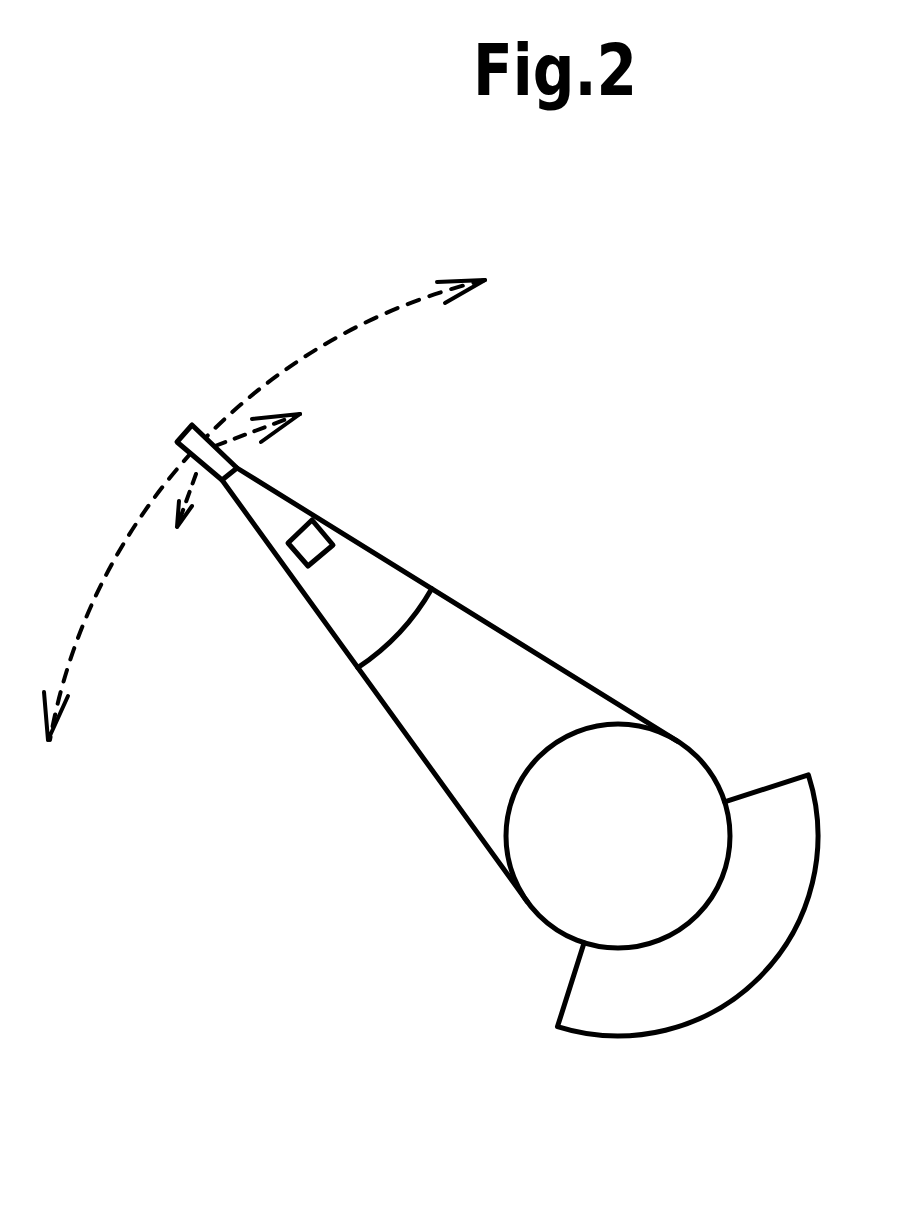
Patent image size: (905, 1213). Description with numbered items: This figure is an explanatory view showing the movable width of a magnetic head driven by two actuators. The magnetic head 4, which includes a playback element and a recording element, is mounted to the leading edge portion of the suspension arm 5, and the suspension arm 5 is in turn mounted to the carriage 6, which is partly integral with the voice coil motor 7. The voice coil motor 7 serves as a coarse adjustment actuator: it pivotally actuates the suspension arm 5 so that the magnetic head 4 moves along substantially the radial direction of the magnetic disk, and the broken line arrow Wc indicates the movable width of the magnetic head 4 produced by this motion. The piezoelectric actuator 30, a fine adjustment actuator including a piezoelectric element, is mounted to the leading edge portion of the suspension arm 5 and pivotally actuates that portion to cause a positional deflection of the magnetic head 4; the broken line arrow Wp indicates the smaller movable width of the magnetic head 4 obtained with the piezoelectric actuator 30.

The magnetic head 4 is at (190, 428).
The suspension arm 5 is at (380, 580).
The carriage 6 is at (563, 688).
The voice coil motor 7 is at (492, 977).
The piezoelectric actuator 30 is at (309, 540).
The movable width of the magnetic head by the voice coil motor Wc is at (362, 322).
The movable width of the magnetic head by the piezoelectric actuator Wp is at (176, 530).